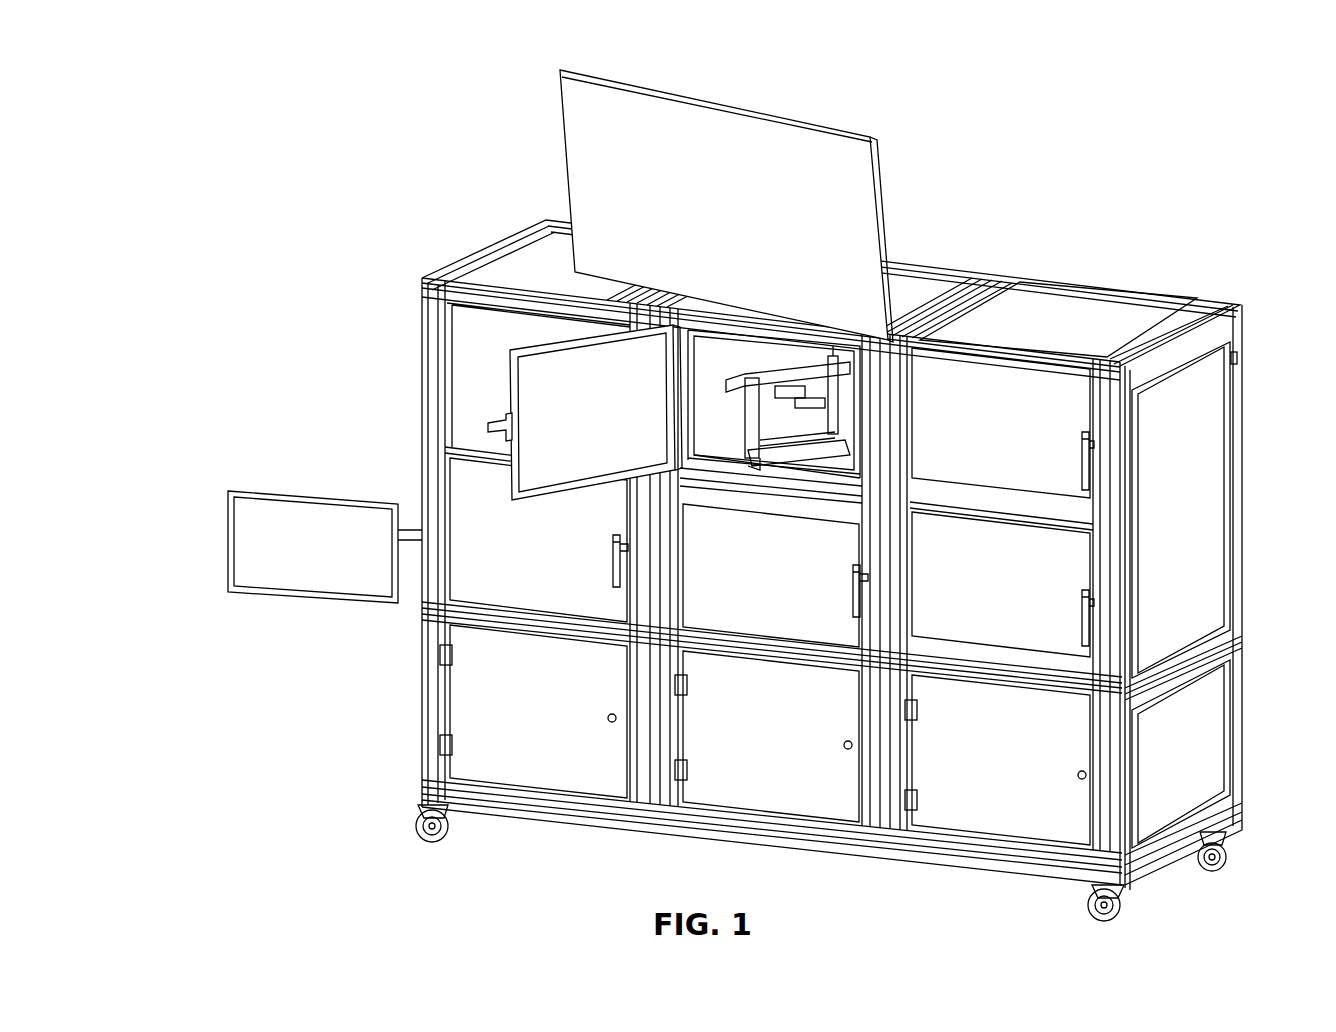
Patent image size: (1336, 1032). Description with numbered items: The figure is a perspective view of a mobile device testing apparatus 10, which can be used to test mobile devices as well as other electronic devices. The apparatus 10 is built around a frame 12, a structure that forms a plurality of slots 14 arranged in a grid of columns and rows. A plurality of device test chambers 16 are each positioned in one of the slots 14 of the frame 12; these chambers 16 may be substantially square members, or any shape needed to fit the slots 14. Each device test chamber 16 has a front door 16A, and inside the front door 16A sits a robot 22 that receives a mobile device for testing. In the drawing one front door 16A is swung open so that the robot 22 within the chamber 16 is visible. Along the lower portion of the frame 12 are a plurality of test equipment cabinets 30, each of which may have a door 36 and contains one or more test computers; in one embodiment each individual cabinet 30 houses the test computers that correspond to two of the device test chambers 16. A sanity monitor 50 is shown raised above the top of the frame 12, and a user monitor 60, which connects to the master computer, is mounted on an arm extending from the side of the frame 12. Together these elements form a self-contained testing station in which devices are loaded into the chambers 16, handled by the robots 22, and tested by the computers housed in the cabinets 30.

The mobile device testing apparatus 10 is at (430, 103).
The frame 12 is at (1100, 305).
The slots 14 is at (1018, 418).
The device test chambers 16 is at (713, 380).
The front door 16A is at (570, 385).
The robot 22 is at (769, 385).
The test equipment cabinets 30 is at (1008, 745).
The door 36 is at (983, 823).
The sanity monitor 50 is at (592, 92).
The user monitor 60 is at (282, 510).